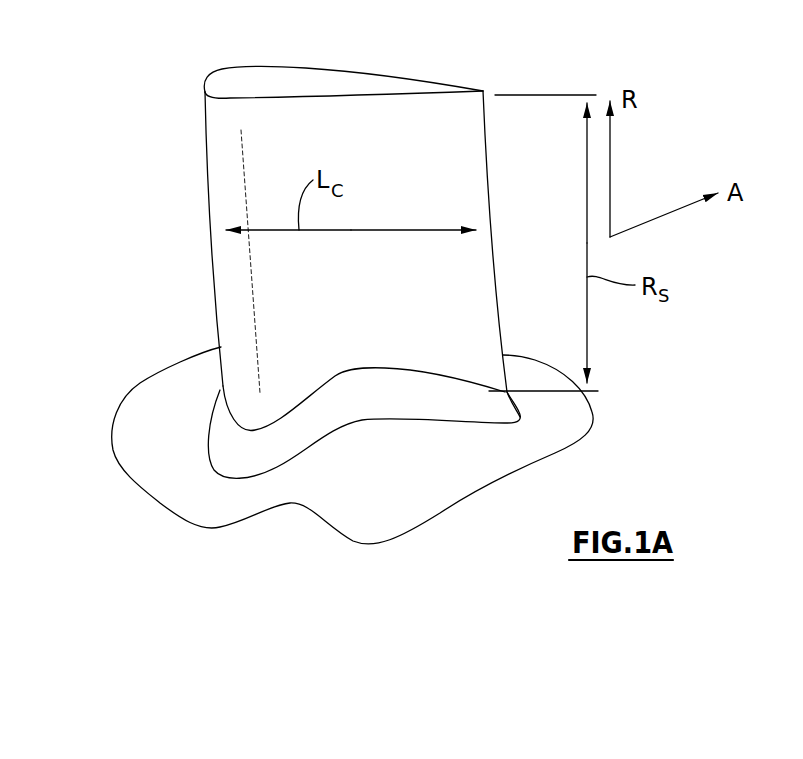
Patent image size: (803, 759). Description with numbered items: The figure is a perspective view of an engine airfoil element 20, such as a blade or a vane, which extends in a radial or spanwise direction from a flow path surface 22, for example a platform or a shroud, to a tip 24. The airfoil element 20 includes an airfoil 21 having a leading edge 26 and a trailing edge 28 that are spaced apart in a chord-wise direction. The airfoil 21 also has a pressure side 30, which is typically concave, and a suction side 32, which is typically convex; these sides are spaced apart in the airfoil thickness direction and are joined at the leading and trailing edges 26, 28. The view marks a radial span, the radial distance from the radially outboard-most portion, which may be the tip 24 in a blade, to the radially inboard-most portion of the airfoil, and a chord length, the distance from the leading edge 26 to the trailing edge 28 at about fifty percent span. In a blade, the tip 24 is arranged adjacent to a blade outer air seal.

The engine airfoil element 20 is at (299, 215).
The airfoil 21 is at (446, 288).
The flow path surface 22 is at (362, 512).
The tip 24 is at (362, 85).
The leading edge 26 is at (209, 183).
The trailing edge 28 is at (490, 193).
The pressure side 30 is at (370, 306).
The suction side 32 is at (277, 66).